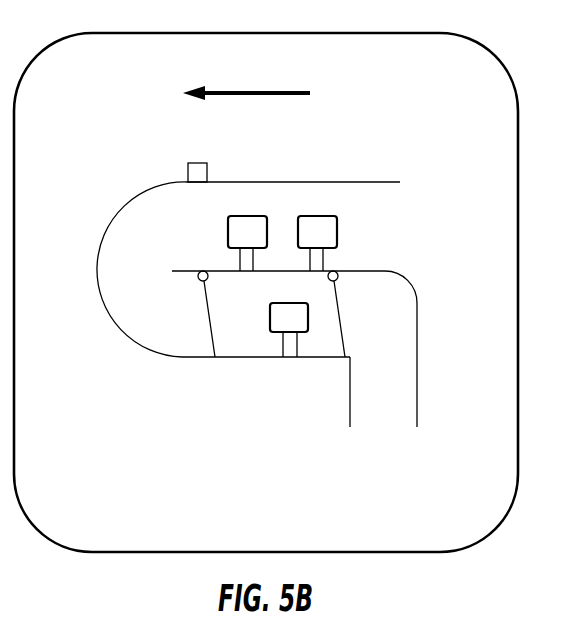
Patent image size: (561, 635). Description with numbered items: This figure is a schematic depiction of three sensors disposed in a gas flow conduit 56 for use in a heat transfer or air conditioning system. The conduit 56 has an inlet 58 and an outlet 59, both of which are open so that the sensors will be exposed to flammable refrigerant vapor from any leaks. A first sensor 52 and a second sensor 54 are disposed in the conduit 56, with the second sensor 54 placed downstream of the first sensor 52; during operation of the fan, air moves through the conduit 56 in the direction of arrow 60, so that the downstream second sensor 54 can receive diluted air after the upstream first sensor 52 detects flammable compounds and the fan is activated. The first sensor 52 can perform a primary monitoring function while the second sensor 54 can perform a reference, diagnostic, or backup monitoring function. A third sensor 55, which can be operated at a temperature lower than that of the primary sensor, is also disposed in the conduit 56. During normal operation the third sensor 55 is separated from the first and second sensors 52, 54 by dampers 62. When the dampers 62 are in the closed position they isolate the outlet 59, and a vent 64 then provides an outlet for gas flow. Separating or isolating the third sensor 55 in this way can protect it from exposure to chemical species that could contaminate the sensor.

The first sensor 52 is at (312, 216).
The second sensor 54 is at (258, 216).
The third sensor 55 is at (270, 317).
The conduit 56 is at (118, 232).
The inlet 58 is at (375, 223).
The outlet 59 is at (378, 412).
The arrow 60 is at (265, 90).
The dampers 62 is at (207, 335).
The vent 64 is at (188, 171).